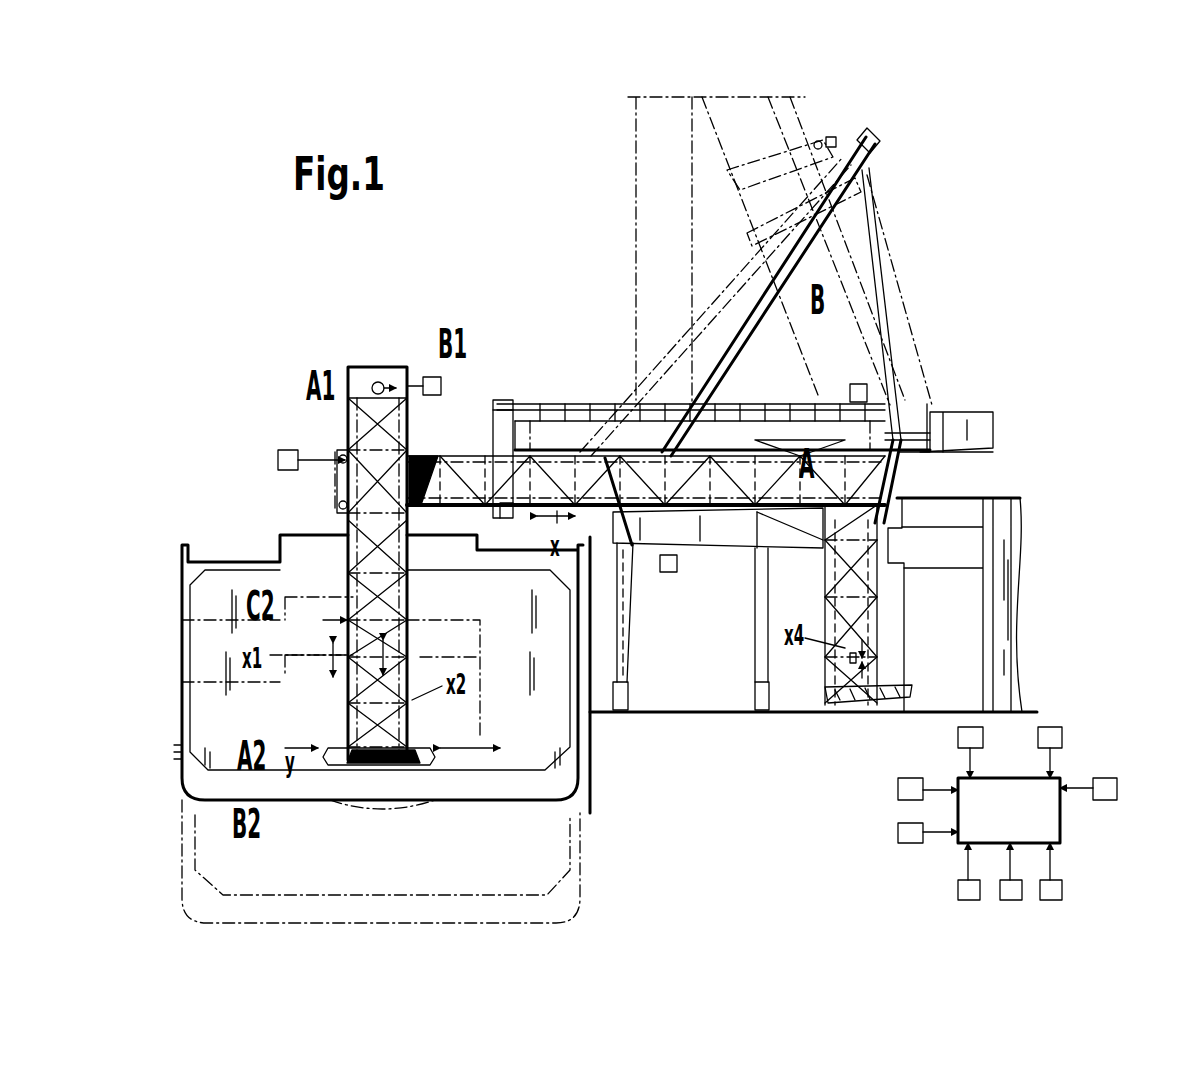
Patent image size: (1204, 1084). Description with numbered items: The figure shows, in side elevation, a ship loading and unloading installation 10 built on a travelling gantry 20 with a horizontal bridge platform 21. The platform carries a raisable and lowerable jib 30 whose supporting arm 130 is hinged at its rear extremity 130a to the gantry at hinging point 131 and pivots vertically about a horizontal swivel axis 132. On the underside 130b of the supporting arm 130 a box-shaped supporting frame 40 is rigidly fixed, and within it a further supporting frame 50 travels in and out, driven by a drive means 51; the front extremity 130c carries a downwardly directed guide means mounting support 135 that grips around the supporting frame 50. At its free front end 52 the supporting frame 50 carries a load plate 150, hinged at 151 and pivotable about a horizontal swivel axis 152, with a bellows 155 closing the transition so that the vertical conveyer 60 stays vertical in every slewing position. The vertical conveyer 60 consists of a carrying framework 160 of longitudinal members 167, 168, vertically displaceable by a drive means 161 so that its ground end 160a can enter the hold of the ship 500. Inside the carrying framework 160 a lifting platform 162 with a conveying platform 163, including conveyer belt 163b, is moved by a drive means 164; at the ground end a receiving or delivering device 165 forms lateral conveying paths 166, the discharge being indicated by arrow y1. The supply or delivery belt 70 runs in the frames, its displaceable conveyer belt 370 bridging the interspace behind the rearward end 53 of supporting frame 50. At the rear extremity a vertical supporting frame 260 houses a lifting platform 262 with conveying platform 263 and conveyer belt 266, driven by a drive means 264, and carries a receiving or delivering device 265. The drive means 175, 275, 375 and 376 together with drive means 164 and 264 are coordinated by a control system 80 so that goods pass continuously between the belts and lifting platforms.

The ship loading and unloading installation 10 is at (585, 348).
The travelling gantry 20 is at (626, 632).
The horizontal bridge platform 21 is at (690, 545).
The jib 30 is at (750, 405).
The supporting frame 40 is at (720, 468).
The supporting frame 50 is at (546, 458).
The drive means 51 is at (667, 572).
The free front end 52 is at (450, 458).
The rearward end 53 is at (610, 528).
The vertical conveyer 60 is at (322, 620).
The supply or delivery belt 70 is at (589, 512).
The control system 80 is at (1045, 826).
The supporting arm 130 is at (860, 383).
The extremity of the supporting arm 130a is at (905, 412).
The underside of the supporting arm 130b is at (873, 322).
The front extremity of the supporting arm 130c is at (540, 404).
The hinging point 131 is at (938, 418).
The horizontal swivel axis 132 is at (925, 452).
The guide means mounting support 135 is at (508, 540).
The load plate 150 is at (345, 475).
The hinge connection 151 is at (408, 512).
The horizontal swivel axis 152 is at (413, 516).
The bellows 155 is at (415, 500).
The carrying framework 160 is at (350, 683).
The ground end of the carrying framework 160a is at (410, 768).
The drive means 161 is at (278, 458).
The lifting platform 162 is at (345, 527).
The conveying platform 163 is at (365, 782).
The conveyer belt 163b is at (337, 497).
The drive means 164 is at (432, 376).
The receiving or delivering device 165 is at (348, 768).
The conveying path 166 is at (352, 755).
The longitudinal member 167 is at (350, 697).
The longitudinal member 168 is at (365, 657).
The drive means 175 is at (1003, 897).
The vertical supporting frame 260 is at (825, 587).
The lifting platform 262 is at (845, 692).
The conveying platform 263 is at (845, 683).
The drive means 264 is at (870, 390).
The receiving or delivering device for goods 265 is at (905, 697).
The conveyer belt 266 is at (883, 690).
The drive means 275 is at (1062, 890).
The conveyer belt 370 is at (748, 513).
The drive means 375 is at (1062, 733).
The drive means 376 is at (958, 736).
The ship 500 is at (182, 654).
The arrow Y1 y1 is at (462, 760).